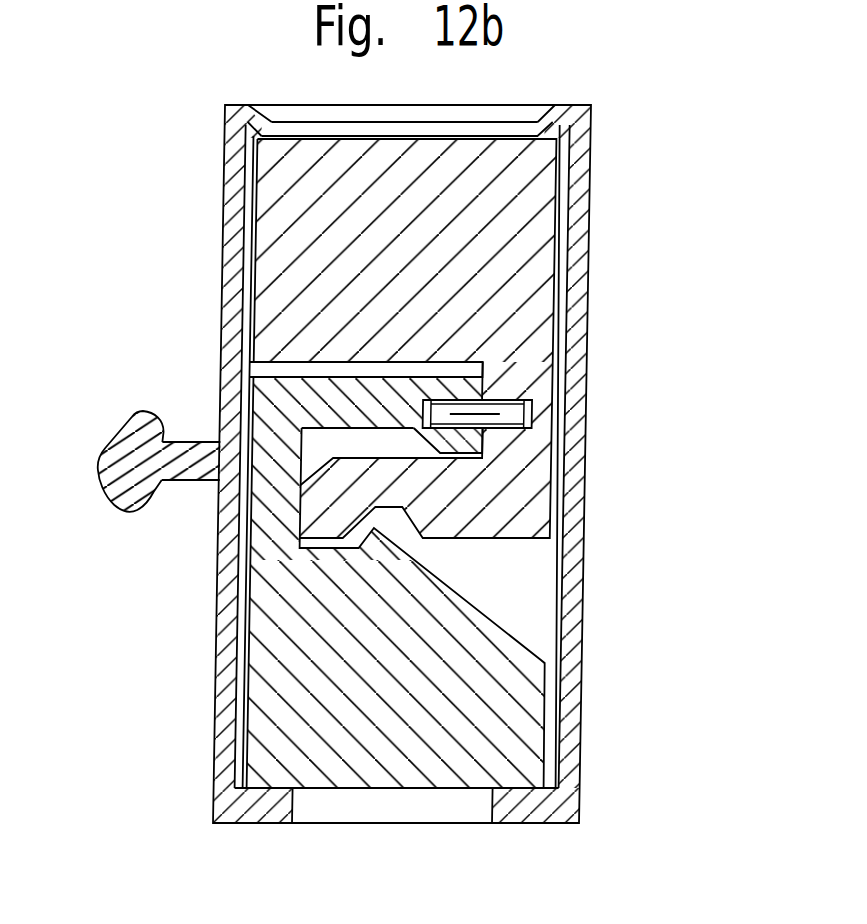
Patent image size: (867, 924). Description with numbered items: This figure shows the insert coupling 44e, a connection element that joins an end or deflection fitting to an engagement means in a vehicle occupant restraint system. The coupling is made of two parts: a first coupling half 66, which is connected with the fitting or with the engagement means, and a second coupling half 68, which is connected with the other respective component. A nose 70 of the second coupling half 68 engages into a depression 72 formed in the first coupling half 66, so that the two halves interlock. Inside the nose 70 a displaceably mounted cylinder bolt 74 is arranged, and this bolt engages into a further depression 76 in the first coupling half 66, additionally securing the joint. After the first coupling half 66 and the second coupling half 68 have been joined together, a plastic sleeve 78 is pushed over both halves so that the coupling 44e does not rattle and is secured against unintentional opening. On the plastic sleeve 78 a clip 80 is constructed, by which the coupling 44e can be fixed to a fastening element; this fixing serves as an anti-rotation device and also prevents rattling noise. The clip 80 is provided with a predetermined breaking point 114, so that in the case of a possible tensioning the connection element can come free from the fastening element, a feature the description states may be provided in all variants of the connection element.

The coupling 44e is at (703, 537).
The plastic sleeve 78 is at (625, 157).
The first coupling half 66 is at (620, 236).
The second coupling half 68 is at (605, 707).
The depression 72 is at (610, 308).
The nose 70 is at (610, 356).
The cylinder bolt 74 is at (610, 401).
The further depression 76 is at (610, 443).
The predetermined breaking point 114 is at (200, 442).
The clip 80 is at (93, 497).